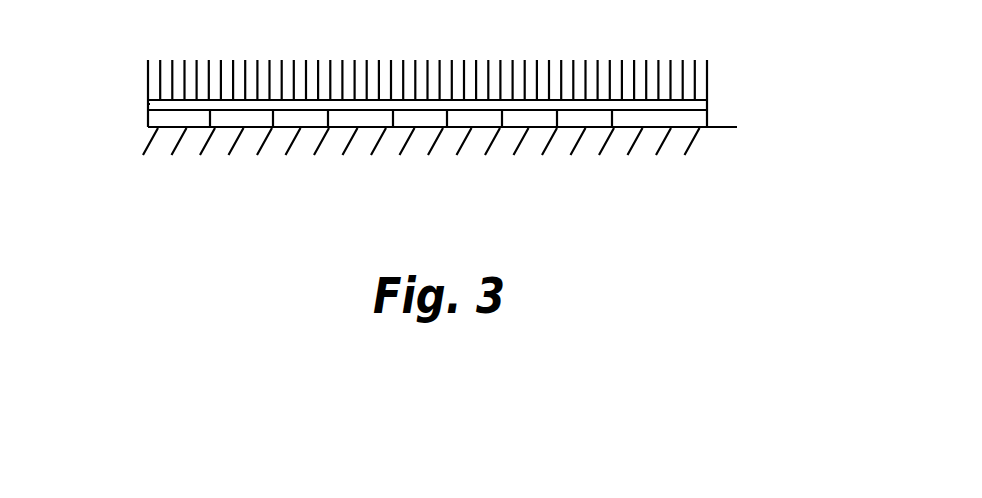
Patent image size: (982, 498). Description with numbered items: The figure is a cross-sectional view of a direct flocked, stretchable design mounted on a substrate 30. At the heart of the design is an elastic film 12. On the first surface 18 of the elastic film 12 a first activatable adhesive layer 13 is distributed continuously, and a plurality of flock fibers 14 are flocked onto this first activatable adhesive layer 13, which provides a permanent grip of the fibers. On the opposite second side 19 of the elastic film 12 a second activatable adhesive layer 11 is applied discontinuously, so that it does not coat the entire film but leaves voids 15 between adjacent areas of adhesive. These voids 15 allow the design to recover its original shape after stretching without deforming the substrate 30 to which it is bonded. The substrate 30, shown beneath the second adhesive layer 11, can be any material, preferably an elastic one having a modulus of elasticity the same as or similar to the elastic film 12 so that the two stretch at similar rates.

The second activatable, discontinuously distributed, adhesive layer 11 is at (170, 120).
The elastic film 12 is at (708, 108).
The first activatable adhesive layer 13 is at (708, 101).
The flock fibers 14 is at (708, 67).
The voids 15 is at (590, 122).
The first surface of the elastic film 18 is at (148, 100).
The second side of the elastic film 19 is at (148, 108).
The substrate 30 is at (720, 128).